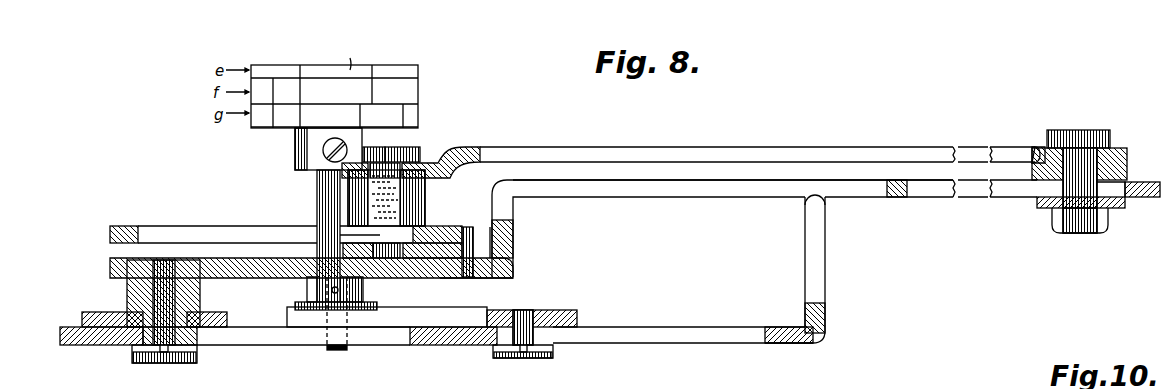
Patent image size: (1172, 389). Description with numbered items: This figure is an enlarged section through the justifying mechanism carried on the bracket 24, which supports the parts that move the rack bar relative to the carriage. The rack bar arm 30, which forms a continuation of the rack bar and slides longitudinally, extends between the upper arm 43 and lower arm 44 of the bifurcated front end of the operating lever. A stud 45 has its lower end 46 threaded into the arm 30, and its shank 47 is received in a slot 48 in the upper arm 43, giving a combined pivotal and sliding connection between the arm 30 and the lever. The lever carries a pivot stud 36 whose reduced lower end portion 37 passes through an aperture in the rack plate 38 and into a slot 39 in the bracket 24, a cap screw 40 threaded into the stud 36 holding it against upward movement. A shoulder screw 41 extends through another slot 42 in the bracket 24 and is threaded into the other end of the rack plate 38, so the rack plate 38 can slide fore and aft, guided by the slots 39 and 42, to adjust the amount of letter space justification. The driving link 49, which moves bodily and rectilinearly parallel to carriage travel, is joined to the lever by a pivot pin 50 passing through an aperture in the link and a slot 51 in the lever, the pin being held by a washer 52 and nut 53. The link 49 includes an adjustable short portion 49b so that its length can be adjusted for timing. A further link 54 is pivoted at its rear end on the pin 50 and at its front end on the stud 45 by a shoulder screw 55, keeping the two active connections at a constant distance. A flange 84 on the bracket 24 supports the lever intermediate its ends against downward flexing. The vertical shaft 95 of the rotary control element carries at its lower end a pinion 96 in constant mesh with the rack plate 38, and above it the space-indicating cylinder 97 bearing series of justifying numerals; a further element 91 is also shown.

The space-indicating cylinder 97 is at (352, 68).
The counter 91 is at (352, 54).
The vertical shaft 95 is at (317, 177).
The shoulder screw 55 is at (420, 150).
The link 54 is at (812, 146).
The pivot stud 36 is at (127, 290).
The slot 51 is at (1020, 197).
The flange 84 is at (825, 215).
The slot 42 is at (645, 344).
The adjustable short portion 49b is at (1035, 147).
The pivot pin 50 is at (1095, 130).
The link 49 is at (1132, 168).
The washer 52 is at (1125, 205).
The nut 53 is at (1108, 228).
The upper arm 43 is at (117, 226).
The slot 48 is at (212, 226).
The shank 47 is at (340, 235).
The stud 45 is at (410, 210).
The lower end 46 is at (385, 278).
The lower arm 44 is at (110, 262).
The arm 30 is at (446, 279).
The reduced lower end portion 37 is at (200, 312).
The rack plate 38 is at (287, 310).
The slot 39 is at (255, 346).
The bracket 24 is at (452, 346).
The cap screw 40 is at (185, 363).
The pinion 96 is at (302, 346).
The shoulder screw 41 is at (530, 359).